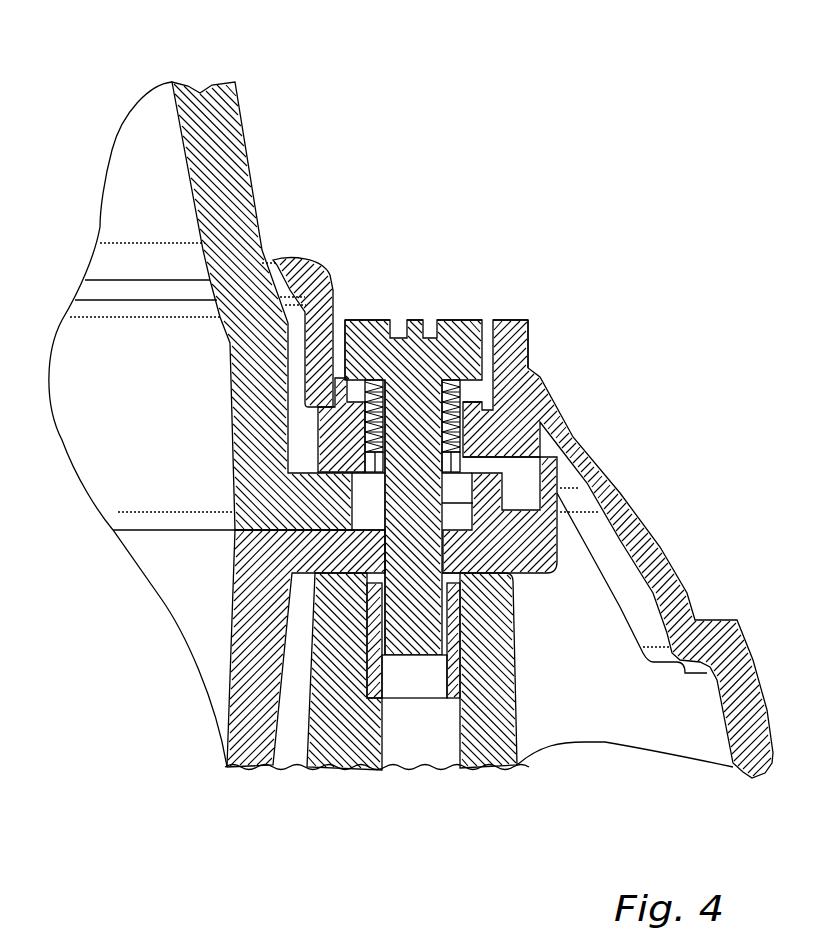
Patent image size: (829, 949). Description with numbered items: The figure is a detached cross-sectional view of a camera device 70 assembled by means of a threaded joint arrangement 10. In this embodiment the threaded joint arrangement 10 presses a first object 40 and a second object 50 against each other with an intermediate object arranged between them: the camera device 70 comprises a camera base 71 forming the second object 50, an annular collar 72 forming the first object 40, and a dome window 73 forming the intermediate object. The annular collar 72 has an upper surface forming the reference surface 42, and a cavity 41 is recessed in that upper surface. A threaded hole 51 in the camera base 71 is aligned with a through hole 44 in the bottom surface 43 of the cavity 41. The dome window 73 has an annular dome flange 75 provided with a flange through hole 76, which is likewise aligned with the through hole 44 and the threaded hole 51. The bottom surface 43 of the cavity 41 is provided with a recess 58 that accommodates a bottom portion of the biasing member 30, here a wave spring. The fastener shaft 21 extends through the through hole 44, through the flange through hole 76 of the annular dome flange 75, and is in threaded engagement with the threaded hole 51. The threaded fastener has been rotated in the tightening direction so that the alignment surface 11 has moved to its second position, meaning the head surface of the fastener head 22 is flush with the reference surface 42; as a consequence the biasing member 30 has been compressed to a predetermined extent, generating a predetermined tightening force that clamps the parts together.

The threaded joint arrangement 10 is at (455, 419).
The alignment surface 11 is at (445, 320).
The fastener shaft 21 is at (543, 512).
The fastener head 22 is at (493, 322).
The biasing member 30 is at (372, 445).
The first object 40 is at (455, 503).
The cavity 41 is at (340, 345).
The reference surface 42 is at (528, 320).
The bottom surface 43 is at (362, 392).
The through hole 44 is at (480, 482).
The second object 50 is at (390, 676).
The threaded hole 51 is at (447, 660).
The recess 58 is at (460, 440).
The camera device 70 is at (391, 389).
The camera base 71 is at (495, 720).
The annular collar 72 is at (530, 350).
The dome window 73 is at (222, 160).
The annular dome flange 75 is at (290, 503).
The flange through hole 76 is at (375, 500).